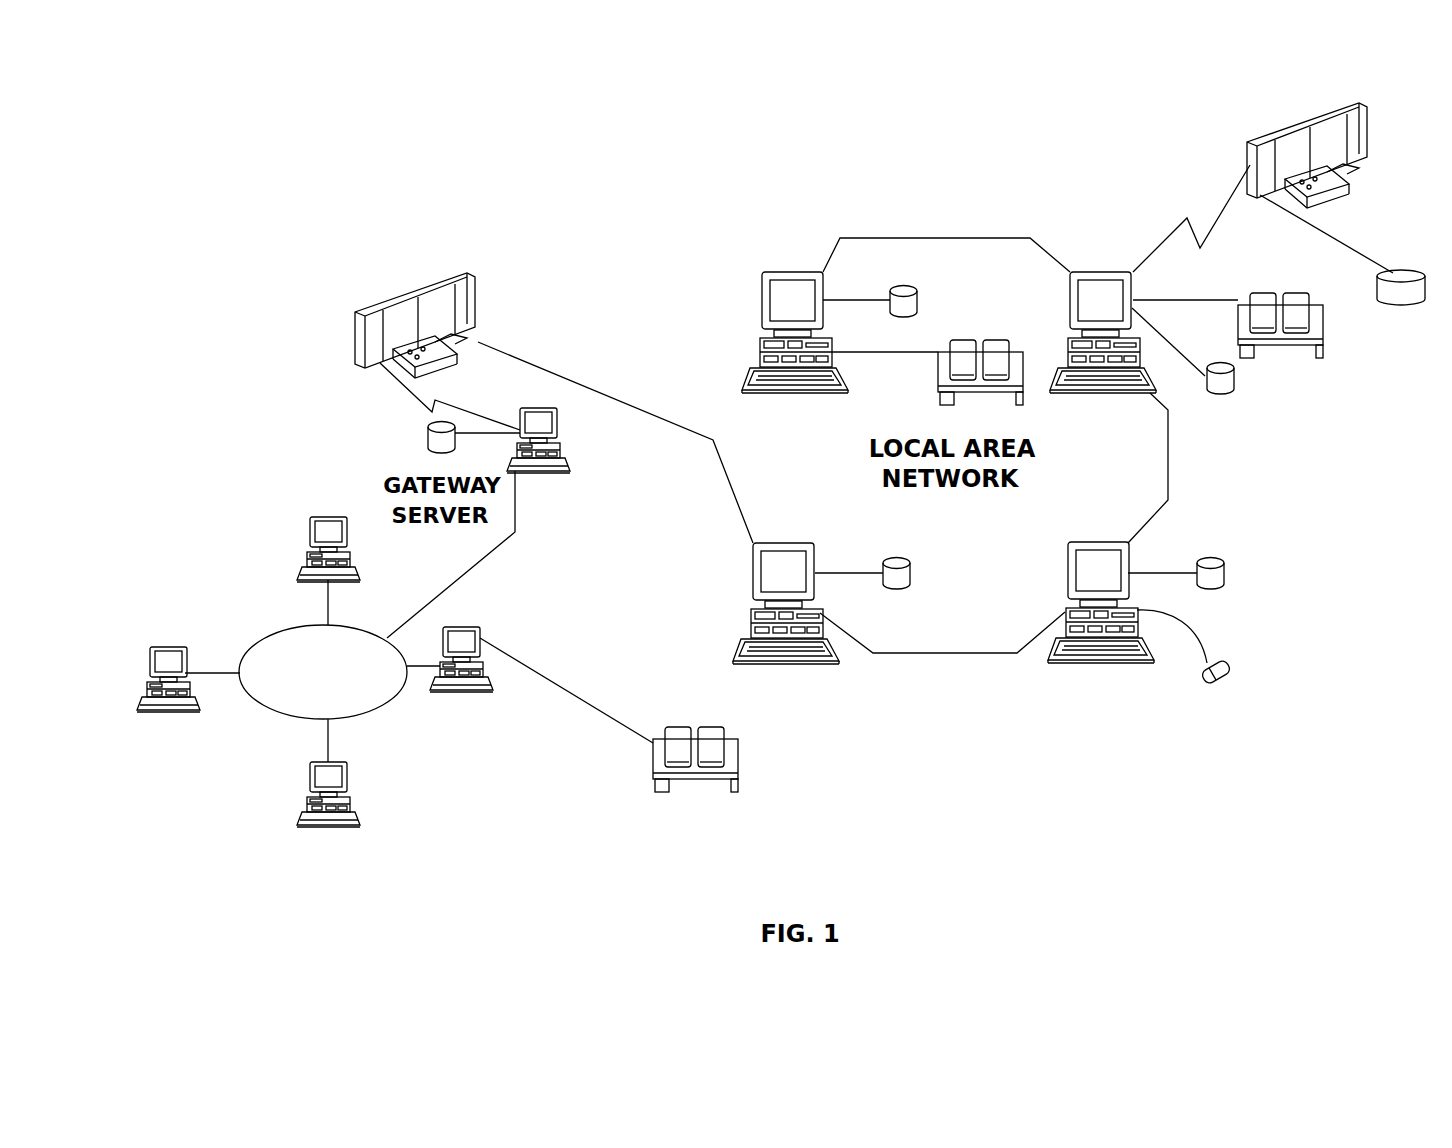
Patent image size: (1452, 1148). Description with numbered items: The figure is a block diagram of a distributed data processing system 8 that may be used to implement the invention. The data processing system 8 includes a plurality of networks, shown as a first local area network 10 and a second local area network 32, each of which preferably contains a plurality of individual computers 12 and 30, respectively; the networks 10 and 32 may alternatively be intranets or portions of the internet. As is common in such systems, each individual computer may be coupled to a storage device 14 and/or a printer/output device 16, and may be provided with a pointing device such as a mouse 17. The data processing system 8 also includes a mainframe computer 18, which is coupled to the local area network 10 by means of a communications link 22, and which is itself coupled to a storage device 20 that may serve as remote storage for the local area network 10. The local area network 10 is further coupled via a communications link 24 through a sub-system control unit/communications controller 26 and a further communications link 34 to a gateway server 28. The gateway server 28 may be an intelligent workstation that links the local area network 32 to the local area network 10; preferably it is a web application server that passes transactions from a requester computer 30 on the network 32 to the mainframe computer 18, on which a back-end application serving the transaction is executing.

The data processing system 8 is at (905, 237).
The local area network 10 is at (933, 655).
The individual computer 12 is at (780, 272).
The storage device 14 is at (917, 298).
The printer/output device 16 is at (982, 342).
The mouse 17 is at (1225, 663).
The mainframe computer 18 is at (1313, 123).
The storage device 20 is at (1417, 268).
The communications link 22 is at (1230, 197).
The communications link 24 is at (598, 387).
The sub-system control unit/communications controller 26 is at (472, 273).
The gateway server 28 is at (532, 408).
The individual computer 30 is at (317, 517).
The local area network 32 is at (272, 713).
The communications link 34 is at (393, 381).